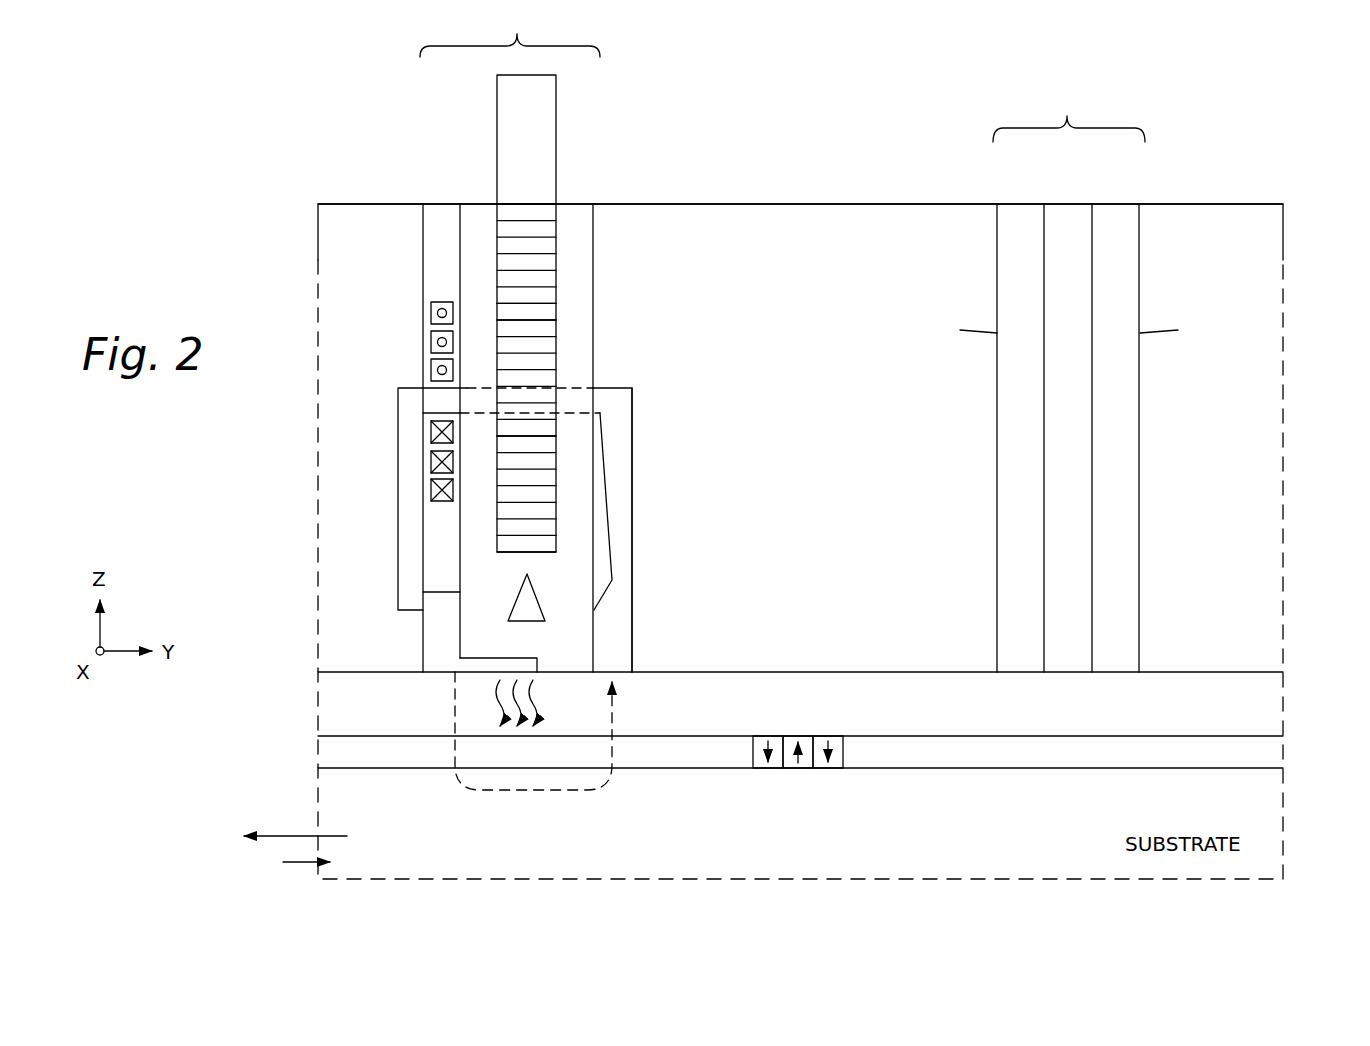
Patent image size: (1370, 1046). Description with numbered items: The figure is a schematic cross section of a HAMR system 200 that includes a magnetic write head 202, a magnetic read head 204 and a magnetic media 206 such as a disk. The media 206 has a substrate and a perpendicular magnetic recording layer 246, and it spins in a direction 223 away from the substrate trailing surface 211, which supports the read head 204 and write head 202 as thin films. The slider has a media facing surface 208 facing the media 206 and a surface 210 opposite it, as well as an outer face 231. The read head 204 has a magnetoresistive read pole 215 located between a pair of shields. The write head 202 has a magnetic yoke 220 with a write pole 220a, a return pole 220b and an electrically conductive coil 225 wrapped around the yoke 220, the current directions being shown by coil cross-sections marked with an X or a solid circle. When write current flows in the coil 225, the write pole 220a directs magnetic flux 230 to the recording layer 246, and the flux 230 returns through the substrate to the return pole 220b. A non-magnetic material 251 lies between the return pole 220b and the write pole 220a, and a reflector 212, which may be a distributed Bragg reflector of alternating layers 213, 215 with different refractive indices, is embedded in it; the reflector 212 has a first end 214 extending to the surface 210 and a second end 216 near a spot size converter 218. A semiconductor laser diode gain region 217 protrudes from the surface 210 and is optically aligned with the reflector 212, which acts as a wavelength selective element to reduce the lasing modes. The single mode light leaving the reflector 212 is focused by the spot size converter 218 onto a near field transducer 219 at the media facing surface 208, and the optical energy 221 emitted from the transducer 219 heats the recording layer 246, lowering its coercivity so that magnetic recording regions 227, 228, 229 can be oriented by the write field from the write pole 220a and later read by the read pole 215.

The HAMR system 200 is at (298, 212).
The magnetic write head 202 is at (510, 32).
The magnetic read head 204 is at (1067, 380).
The magnetic media 206 is at (285, 869).
The media facing surface 208 is at (1230, 675).
The surface opposite the MFS 210 is at (752, 200).
The substrate trailing surface 211 is at (1136, 221).
The reflector 212 is at (557, 442).
The alternating layer 213 is at (550, 292).
The first end 214 is at (530, 203).
The magnetoresistive read pole 215 is at (550, 308).
The second end 216 is at (527, 552).
The semiconductor laser diode gain region 217 is at (531, 112).
The spot size converter 218 is at (530, 600).
The near field transducer 219 is at (515, 665).
The magnetic yoke 220 is at (398, 404).
The write pole 220a is at (405, 655).
The return pole 220b is at (632, 640).
The optical energy 221 is at (490, 705).
The direction 223 is at (295, 807).
The electrically conductive coil 225 is at (415, 302).
The magnetic recording region 227 is at (793, 770).
The magnetic recording region 228 is at (760, 770).
The magnetic recording region 229 is at (833, 770).
The magnetic flux 230 is at (527, 792).
The outer face 231 is at (328, 578).
The perpendicular magnetic recording layer 246 is at (328, 754).
The non-magnetic material 251 is at (580, 247).